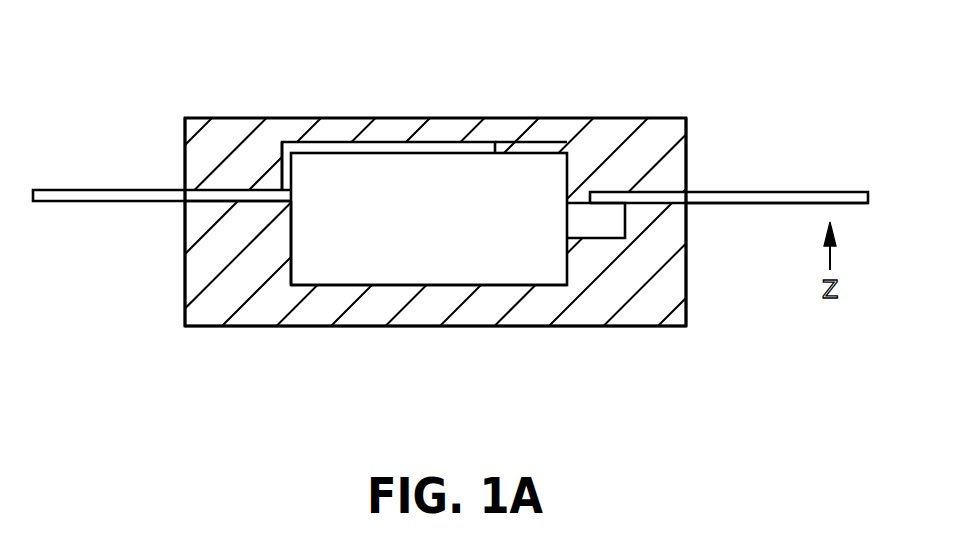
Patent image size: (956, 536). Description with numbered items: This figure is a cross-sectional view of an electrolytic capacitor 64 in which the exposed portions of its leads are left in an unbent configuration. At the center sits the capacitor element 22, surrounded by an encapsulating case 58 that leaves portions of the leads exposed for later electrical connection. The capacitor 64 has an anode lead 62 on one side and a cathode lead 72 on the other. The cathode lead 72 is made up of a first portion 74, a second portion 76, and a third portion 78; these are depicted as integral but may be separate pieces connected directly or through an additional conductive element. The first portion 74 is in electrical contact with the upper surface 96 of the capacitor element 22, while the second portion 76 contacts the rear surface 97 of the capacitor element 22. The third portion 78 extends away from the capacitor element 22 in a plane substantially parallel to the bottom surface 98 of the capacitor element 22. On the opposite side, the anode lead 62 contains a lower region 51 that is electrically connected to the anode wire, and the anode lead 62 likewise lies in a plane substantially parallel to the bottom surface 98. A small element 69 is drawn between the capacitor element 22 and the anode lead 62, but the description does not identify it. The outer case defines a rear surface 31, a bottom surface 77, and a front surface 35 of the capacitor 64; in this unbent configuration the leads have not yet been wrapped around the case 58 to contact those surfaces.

The capacitor 64 is at (260, 90).
The first portion 74 is at (483, 140).
The upper surface 96 is at (562, 149).
The encapsulating case 58 is at (677, 160).
The anode lead 62 is at (757, 192).
The second portion 76 is at (280, 170).
The cathode lead 72 is at (135, 205).
The rear surface 31 is at (185, 298).
The third portion 78 is at (245, 205).
The rear surface 97 is at (291, 268).
The bottom surface 98 is at (492, 285).
The bottom surface 77 is at (617, 327).
The front surface 35 is at (687, 297).
The die attach pad 69 is at (627, 220).
The lower region 51 is at (768, 203).
The capacitor element 22 is at (452, 222).